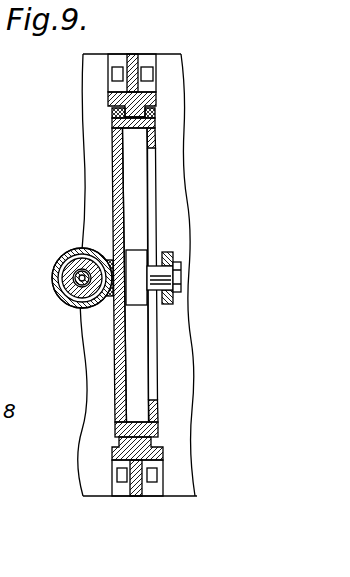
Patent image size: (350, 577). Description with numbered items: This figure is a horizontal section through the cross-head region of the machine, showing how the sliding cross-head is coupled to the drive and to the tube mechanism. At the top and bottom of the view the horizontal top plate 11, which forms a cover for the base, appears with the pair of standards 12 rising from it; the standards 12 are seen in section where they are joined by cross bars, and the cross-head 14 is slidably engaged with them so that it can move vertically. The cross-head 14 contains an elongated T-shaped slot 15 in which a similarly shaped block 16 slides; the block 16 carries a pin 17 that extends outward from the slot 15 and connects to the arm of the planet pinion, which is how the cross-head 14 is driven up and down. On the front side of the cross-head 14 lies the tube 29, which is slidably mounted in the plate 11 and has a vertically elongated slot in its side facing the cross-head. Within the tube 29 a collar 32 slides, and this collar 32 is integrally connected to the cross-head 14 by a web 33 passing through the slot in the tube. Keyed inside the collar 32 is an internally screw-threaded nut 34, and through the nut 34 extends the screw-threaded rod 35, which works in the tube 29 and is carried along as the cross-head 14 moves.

The horizontal top plate 11 is at (176, 63).
The standards 12 is at (156, 98).
The cross-head 14 is at (113, 192).
The T-shaped slot 15 is at (135, 186).
The block 16 is at (137, 257).
The pin 17 is at (219, 291).
The tube 29 is at (66, 251).
The collar 32 is at (81, 305).
The web 33 is at (109, 268).
The nut 34 is at (63, 288).
The screw-threaded rod 35 is at (59, 270).